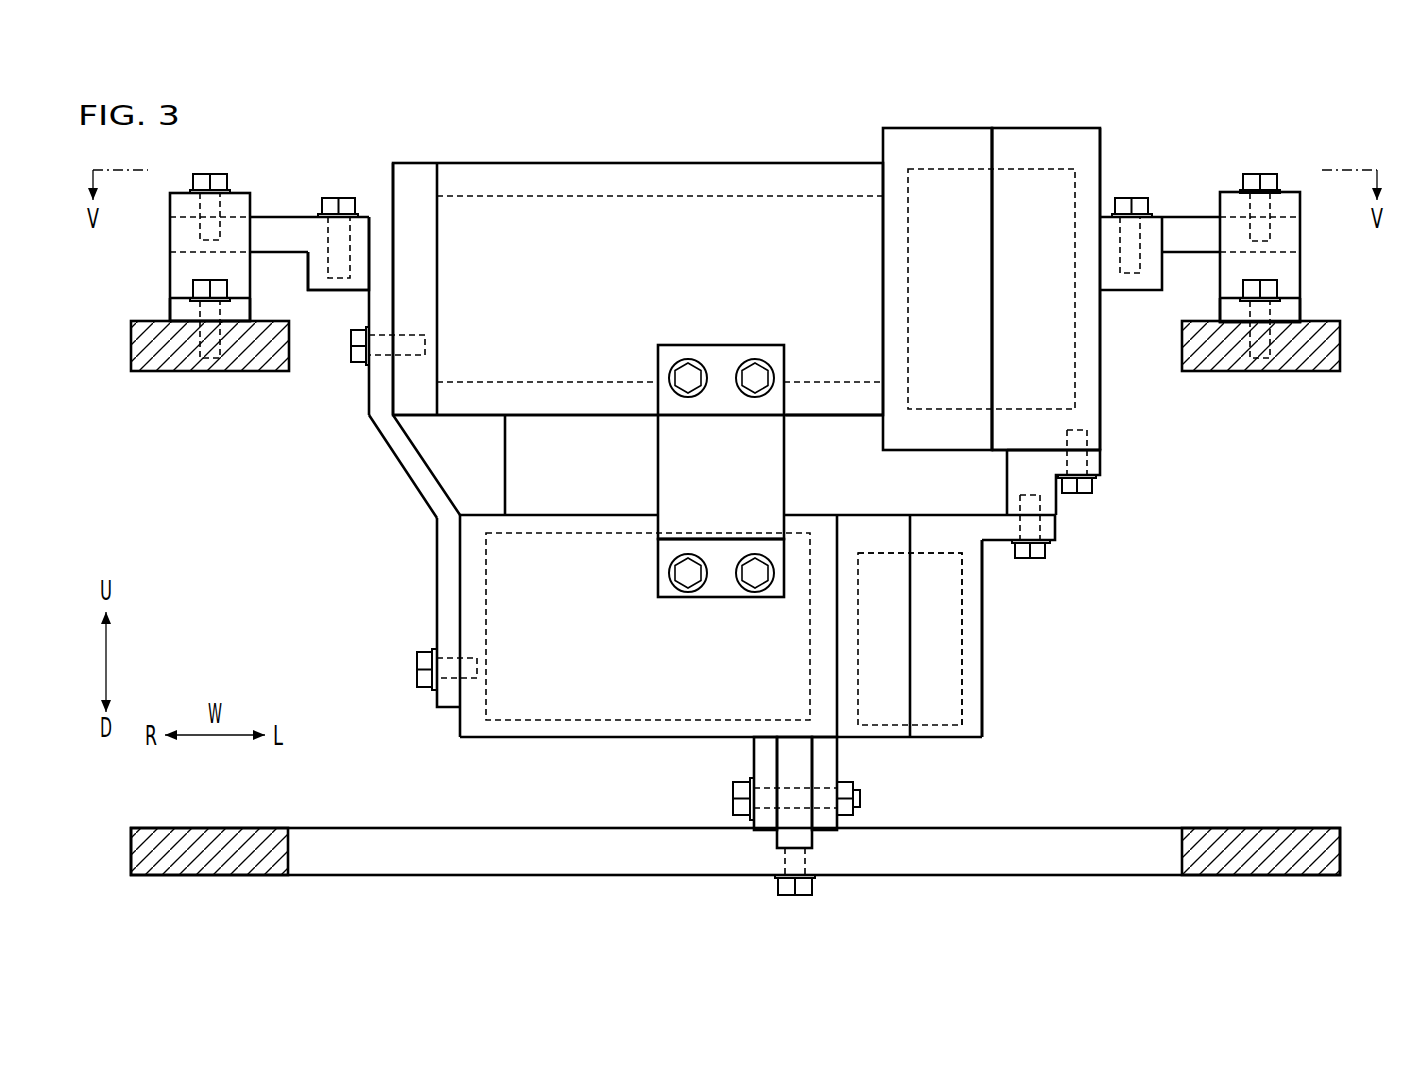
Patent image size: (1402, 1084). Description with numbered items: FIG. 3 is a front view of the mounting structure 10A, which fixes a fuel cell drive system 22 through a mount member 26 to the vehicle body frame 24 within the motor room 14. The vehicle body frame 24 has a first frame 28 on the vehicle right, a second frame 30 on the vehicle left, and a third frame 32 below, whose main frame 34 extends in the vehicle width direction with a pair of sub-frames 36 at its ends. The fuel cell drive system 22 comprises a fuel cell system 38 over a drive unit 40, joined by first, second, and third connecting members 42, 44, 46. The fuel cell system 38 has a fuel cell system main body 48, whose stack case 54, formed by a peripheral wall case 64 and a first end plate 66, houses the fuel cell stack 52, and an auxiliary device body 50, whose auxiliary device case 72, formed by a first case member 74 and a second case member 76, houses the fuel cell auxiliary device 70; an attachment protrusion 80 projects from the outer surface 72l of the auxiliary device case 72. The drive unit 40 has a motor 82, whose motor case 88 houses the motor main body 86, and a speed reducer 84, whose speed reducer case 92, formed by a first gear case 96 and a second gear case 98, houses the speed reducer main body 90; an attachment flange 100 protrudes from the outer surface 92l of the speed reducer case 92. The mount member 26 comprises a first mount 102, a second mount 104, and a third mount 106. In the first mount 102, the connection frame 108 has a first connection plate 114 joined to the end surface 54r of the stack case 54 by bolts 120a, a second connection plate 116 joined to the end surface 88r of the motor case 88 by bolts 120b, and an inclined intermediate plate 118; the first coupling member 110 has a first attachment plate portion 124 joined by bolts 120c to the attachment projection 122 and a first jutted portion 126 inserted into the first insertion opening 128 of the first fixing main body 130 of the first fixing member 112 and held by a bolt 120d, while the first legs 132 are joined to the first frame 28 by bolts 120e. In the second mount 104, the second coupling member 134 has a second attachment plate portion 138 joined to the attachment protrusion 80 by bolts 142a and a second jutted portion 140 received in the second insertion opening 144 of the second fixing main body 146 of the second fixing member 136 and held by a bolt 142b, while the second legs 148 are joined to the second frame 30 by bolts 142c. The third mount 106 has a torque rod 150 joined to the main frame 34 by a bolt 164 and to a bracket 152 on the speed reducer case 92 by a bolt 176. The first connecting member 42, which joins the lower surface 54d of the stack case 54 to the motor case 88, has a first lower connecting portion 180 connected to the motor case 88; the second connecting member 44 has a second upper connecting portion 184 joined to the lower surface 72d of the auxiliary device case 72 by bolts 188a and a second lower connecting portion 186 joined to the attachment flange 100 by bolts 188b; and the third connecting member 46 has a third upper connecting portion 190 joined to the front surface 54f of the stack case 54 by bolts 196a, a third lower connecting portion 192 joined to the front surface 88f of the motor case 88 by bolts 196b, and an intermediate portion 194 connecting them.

The mounting structure 10A is at (487, 132).
The motor room 14 is at (355, 583).
The fuel cell drive system 22 is at (675, 150).
The vehicle body frame 24 is at (736, 598).
The mount member 26 is at (739, 500).
The first frame 28 is at (143, 364).
The second frame 30 is at (1325, 368).
The third frame 32 is at (1287, 806).
The main frame 34 is at (1112, 848).
The sub-frames 36 is at (225, 850).
The fuel cell system 38 is at (830, 134).
The drive unit 40 is at (1049, 588).
The first connecting member 42 is at (485, 461).
The second connecting member 44 is at (1022, 445).
The third connecting member 46 is at (690, 330).
The fuel cell system main body 48 is at (708, 162).
The auxiliary device body 50 is at (880, 143).
The fuel cell stack 52 is at (527, 196).
The stack case 54 is at (616, 162).
The end surface of stack case 54r is at (383, 215).
The lower surface of stack case 54d is at (630, 417).
The front surface of stack case 54f is at (827, 405).
The peripheral wall case 64 is at (573, 166).
The first end plate 66 is at (423, 316).
The fuel cell auxiliary device 70 is at (952, 168).
The auxiliary device case 72 is at (769, 222).
The outer surface of auxiliary device case 72l is at (1101, 152).
The lower surface of auxiliary device case 72d is at (1037, 452).
The first case member 74 is at (900, 289).
The second case member 76 is at (1015, 242).
The attachment protrusion 80 is at (1124, 293).
The motor 82 is at (840, 600).
The speed reducer 84 is at (990, 604).
The motor main body 86 is at (598, 722).
The motor case 88 is at (500, 742).
The end surface of motor case 88r is at (457, 627).
The front surface of motor case 88f is at (553, 740).
The speed reducer main body 90 is at (944, 736).
The speed reducer case 92 is at (1037, 670).
The outer surface of speed reducer case 92l is at (985, 667).
The first gear case 96 is at (898, 713).
The second gear case 98 is at (975, 691).
The attachment flange 100 is at (1050, 528).
The first mount 102 is at (205, 432).
The second mount 104 is at (1165, 370).
The third mount 106 is at (770, 886).
The connection frame 108 is at (306, 455).
The first coupling member 110 is at (345, 156).
The first fixing member 112 is at (227, 160).
The first connection plate 114 is at (368, 400).
The second connection plate 116 is at (438, 540).
The intermediate plate 118 is at (408, 472).
The bolts 120a is at (352, 347).
The bolts 120b is at (416, 666).
The bolts 120c is at (354, 205).
The bolt 120d is at (207, 175).
The bolts 120e is at (228, 290).
The attachment projection 122 is at (362, 272).
The first attachment plate portion 124 is at (320, 237).
The first jutted portion 126 is at (272, 230).
The first insertion opening 128 is at (187, 245).
The first fixing main body 130 is at (180, 264).
The first legs 132 is at (183, 333).
The second coupling member 134 is at (1218, 158).
The second fixing member 136 is at (1310, 168).
The second attachment plate portion 138 is at (1150, 236).
The second jutted portion 140 is at (1197, 230).
The bolts 142a is at (1128, 211).
The bolt 142b is at (1265, 176).
The bolts 142c is at (1243, 285).
The second insertion opening 144 is at (1285, 243).
The second fixing main body 146 is at (1230, 192).
The second legs 148 is at (1285, 313).
The torque rod 150 is at (775, 766).
The bracket 152 is at (832, 765).
The bolt 164 is at (808, 884).
The bolt 176 is at (737, 796).
The first lower connecting portion 180 is at (485, 495).
The second upper connecting portion 184 is at (1100, 463).
The second lower connecting portion 186 is at (1010, 487).
The bolts 188a is at (1092, 487).
The bolts 188b is at (1047, 554).
The third upper connecting portion 190 is at (677, 485).
The third lower connecting portion 192 is at (777, 598).
The intermediate portion 194 is at (677, 543).
The bolts 196a is at (751, 383).
The bolts 196b is at (750, 580).